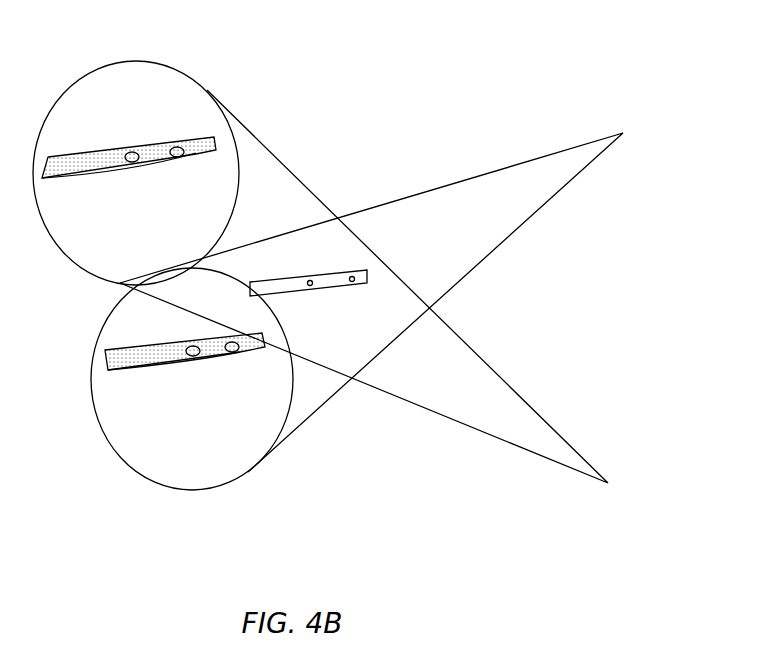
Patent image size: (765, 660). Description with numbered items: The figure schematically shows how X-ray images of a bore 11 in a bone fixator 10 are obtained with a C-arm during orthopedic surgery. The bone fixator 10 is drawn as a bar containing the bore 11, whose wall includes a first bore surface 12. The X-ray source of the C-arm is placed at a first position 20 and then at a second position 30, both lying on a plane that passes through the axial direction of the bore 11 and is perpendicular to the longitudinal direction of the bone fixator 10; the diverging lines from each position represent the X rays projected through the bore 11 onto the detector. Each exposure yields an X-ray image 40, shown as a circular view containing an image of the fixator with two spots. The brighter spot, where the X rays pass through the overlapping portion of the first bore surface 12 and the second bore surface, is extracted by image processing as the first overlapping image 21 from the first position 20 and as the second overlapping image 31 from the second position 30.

The bone fixator 10 is at (309, 271).
The bore 11 is at (345, 286).
The first bore surface 12 is at (353, 283).
The first position 20 is at (608, 483).
The first overlapping image 21 is at (177, 140).
The second position 30 is at (623, 133).
The second overlapping image 31 is at (226, 364).
The X-ray image 40 is at (83, 78).